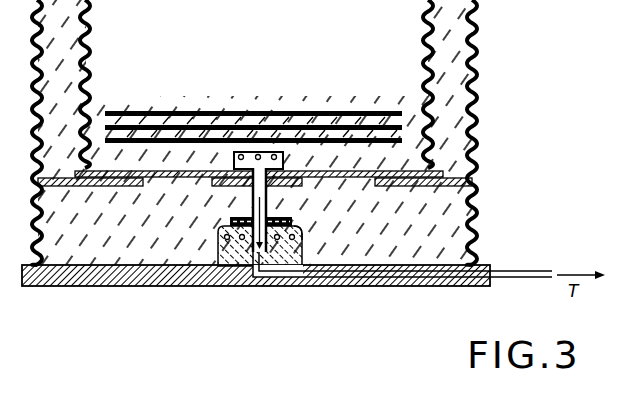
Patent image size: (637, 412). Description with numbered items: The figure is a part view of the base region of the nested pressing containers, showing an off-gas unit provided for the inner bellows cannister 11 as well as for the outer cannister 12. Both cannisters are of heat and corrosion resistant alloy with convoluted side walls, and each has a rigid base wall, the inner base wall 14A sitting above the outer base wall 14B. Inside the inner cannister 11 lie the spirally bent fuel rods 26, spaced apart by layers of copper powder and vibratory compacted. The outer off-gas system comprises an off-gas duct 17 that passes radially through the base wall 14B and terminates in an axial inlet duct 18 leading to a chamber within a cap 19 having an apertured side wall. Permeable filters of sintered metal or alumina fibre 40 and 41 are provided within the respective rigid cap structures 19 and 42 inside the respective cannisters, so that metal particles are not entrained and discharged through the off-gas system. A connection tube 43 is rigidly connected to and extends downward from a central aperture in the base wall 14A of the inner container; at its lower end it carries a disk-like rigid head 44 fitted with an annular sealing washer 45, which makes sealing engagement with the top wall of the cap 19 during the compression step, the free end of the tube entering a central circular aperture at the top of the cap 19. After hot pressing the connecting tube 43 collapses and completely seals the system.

The inner cannister 11 is at (445, 62).
The outer cannister 12 is at (482, 113).
The spirally bent fuel rods 26 is at (119, 111).
The rigid cap structure 42 is at (247, 150).
The permeable filter 41 is at (276, 150).
The connection tube 43 is at (266, 204).
The rigid base wall of inner cannister 14A is at (147, 178).
The rigid base wall of outer cannister 14B is at (216, 282).
The disk-like rigid head 44 is at (248, 209).
The permeable filter 40 is at (279, 298).
The axial inlet duct 18 is at (303, 266).
The cap 19 is at (284, 223).
The annular sealing washer 45 is at (298, 231).
The off-gas duct 17 is at (425, 266).